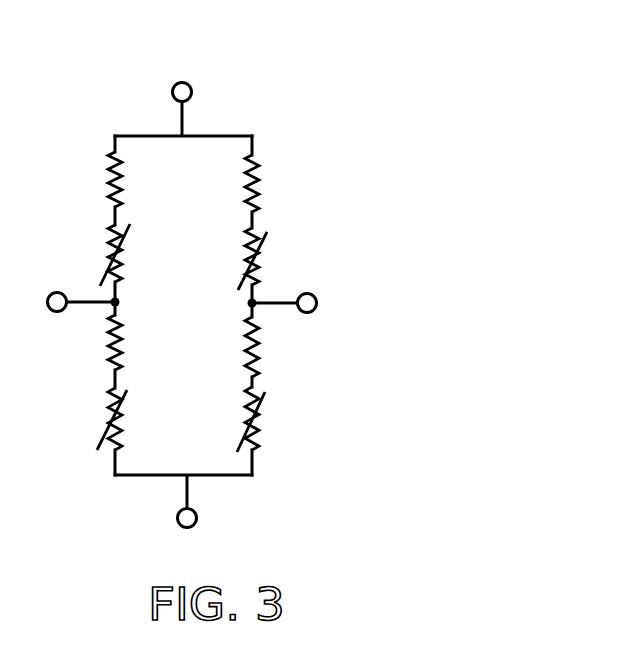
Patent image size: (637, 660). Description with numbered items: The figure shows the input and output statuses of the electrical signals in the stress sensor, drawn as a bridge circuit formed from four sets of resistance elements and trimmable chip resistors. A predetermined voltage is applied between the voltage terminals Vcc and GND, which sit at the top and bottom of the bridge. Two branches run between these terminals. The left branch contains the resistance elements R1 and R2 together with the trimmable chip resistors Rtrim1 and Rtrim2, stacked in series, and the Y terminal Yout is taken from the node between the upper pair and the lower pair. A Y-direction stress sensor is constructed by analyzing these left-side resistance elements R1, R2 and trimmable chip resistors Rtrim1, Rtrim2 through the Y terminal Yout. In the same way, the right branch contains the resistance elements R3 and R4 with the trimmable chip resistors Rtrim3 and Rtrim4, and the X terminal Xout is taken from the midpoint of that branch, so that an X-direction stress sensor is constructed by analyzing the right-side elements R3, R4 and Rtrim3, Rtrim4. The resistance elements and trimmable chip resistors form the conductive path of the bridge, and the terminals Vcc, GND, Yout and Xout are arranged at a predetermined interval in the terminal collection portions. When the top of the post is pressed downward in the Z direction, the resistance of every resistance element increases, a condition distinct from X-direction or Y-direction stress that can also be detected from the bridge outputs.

The voltage terminal Vcc is at (181, 92).
The voltage terminal GND is at (185, 513).
The resistance element R1 is at (134, 179).
The resistance element R2 is at (132, 342).
The resistance element R3 is at (272, 183).
The resistance element R4 is at (269, 347).
The trimmable chip resistor Rtrim1 is at (153, 255).
The trimmable chip resistor Rtrim2 is at (149, 419).
The trimmable chip resistor Rtrim3 is at (291, 259).
The trimmable chip resistor Rtrim4 is at (291, 419).
The Y terminal Yout is at (78, 315).
The X terminal Xout is at (289, 316).